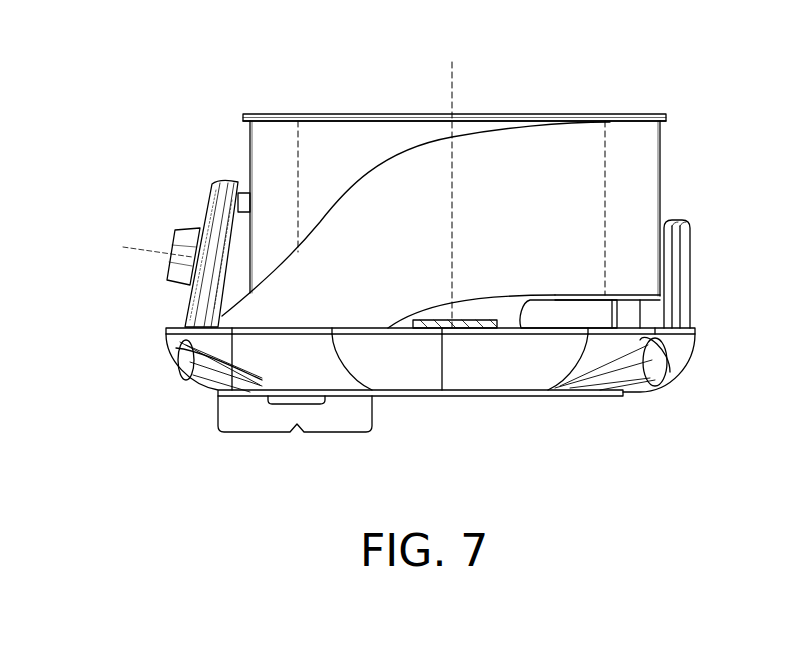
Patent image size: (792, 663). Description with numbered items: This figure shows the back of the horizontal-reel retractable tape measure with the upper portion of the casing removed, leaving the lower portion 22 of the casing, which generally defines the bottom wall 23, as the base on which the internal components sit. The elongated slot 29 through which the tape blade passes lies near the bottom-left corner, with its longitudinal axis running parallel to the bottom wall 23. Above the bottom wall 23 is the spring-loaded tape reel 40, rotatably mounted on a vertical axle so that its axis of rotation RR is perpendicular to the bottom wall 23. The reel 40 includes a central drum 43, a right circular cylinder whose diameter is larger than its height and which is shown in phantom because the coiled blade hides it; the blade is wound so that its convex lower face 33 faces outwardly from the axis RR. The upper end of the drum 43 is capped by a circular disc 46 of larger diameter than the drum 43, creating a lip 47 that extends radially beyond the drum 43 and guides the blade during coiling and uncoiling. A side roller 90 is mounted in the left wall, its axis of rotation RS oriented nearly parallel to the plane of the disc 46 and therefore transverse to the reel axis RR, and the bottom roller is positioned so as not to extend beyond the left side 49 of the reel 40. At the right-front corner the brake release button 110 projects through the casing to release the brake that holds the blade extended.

The lower portion 22 is at (158, 366).
The bottom wall 23 is at (432, 430).
The elongated slot 29 is at (241, 420).
The lower face 33 is at (322, 295).
The tape reel 40 is at (475, 187).
The central drum 43 is at (605, 204).
The circular disc 46 is at (380, 113).
The lip 47 is at (268, 113).
The left side of the reel 49 is at (249, 180).
The side roller 90 is at (184, 274).
The brake release button 110 is at (668, 282).
The axis of rotation of the tape reel RR is at (452, 78).
The axis of rotation of the side roller RS is at (146, 257).